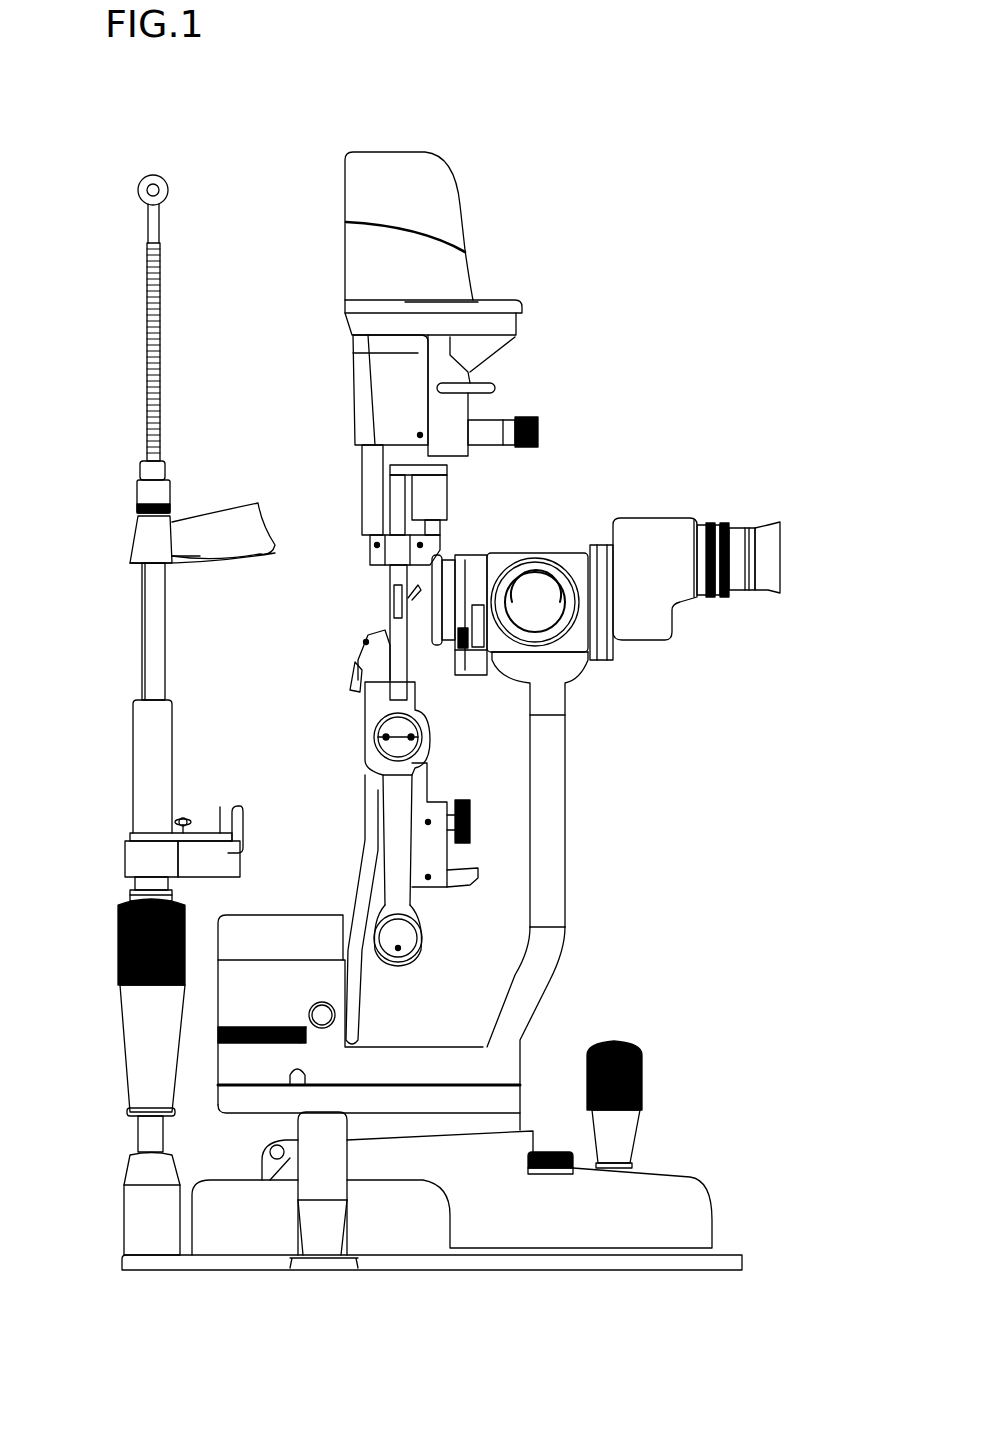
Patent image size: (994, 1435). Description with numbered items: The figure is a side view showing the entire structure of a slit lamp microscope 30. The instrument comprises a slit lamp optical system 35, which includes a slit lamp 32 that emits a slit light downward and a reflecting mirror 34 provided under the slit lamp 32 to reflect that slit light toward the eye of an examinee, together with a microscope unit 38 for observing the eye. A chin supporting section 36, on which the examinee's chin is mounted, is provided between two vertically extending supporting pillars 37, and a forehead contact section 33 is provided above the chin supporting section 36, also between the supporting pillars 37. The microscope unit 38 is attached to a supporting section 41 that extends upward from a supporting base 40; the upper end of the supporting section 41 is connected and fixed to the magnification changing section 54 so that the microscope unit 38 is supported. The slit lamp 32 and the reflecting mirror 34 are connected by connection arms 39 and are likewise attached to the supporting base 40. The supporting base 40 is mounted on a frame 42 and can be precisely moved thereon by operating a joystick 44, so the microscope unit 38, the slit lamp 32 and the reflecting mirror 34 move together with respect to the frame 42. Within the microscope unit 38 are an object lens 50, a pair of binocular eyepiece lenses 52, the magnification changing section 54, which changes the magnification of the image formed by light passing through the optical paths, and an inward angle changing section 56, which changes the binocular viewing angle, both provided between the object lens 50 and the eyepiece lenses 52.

The slit lamp microscope 30 is at (707, 350).
The slit lamp 32 is at (460, 222).
The forehead contact section 33 is at (226, 518).
The reflecting mirror 34 is at (395, 597).
The slit lamp optical system 35 is at (340, 412).
The chin supporting section 36 is at (215, 828).
The supporting pillars 37 is at (143, 1046).
The microscope unit 38 is at (648, 514).
The connection arms 39 is at (393, 688).
The supporting base 40 is at (495, 1110).
The supporting section 41 is at (560, 808).
The frame 42 is at (677, 1200).
The joystick 44 is at (640, 1042).
The object lens 50 is at (437, 645).
The binocular eyepiece lenses 52 is at (760, 542).
The magnification changing section 54 is at (549, 560).
The inward angle changing section 56 is at (470, 565).